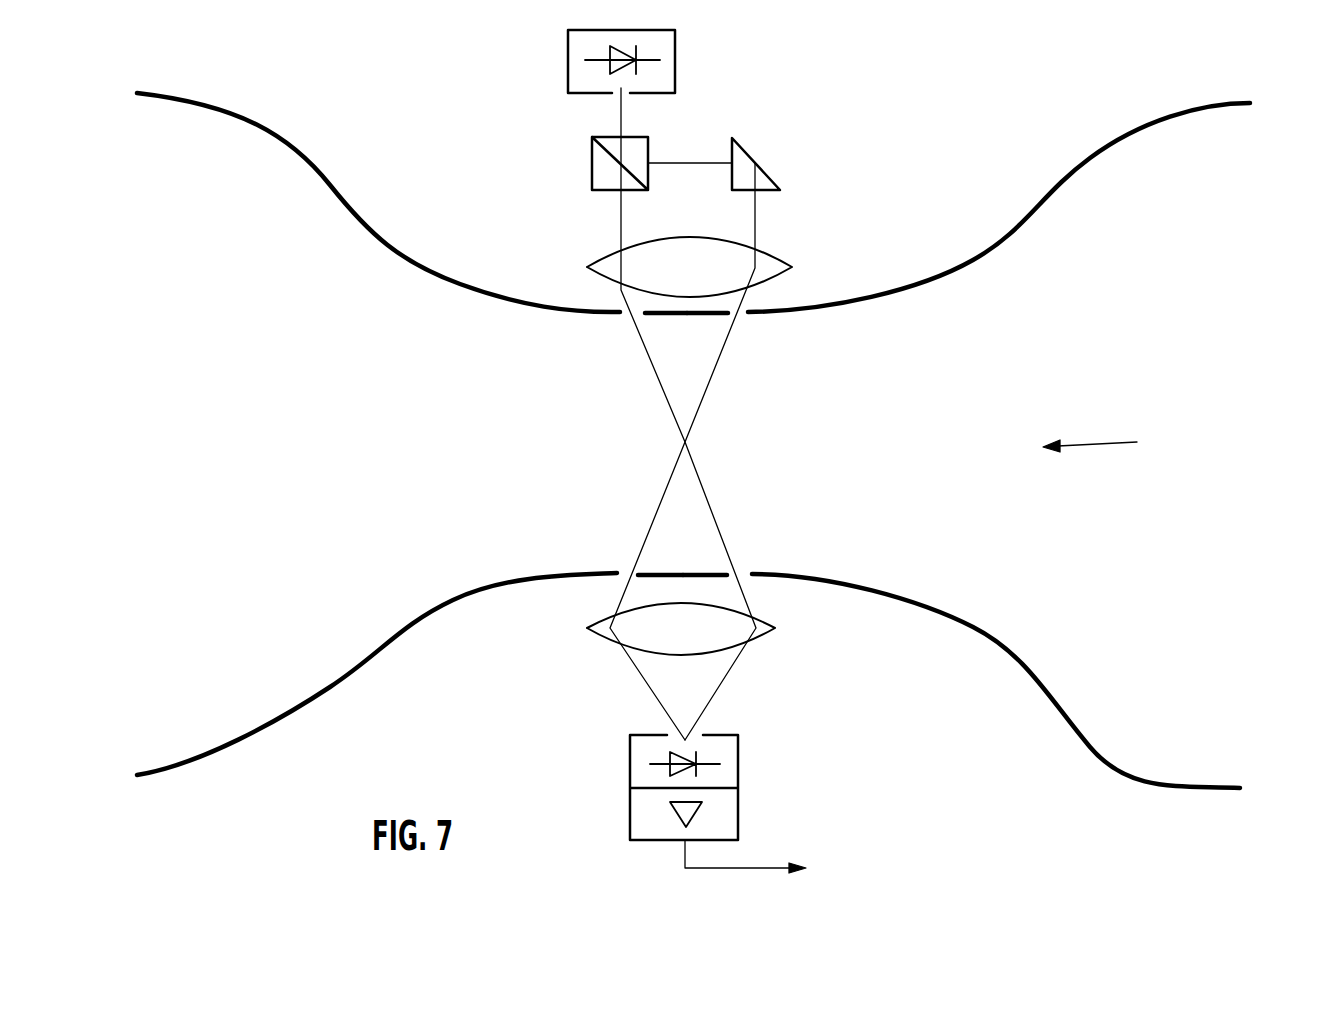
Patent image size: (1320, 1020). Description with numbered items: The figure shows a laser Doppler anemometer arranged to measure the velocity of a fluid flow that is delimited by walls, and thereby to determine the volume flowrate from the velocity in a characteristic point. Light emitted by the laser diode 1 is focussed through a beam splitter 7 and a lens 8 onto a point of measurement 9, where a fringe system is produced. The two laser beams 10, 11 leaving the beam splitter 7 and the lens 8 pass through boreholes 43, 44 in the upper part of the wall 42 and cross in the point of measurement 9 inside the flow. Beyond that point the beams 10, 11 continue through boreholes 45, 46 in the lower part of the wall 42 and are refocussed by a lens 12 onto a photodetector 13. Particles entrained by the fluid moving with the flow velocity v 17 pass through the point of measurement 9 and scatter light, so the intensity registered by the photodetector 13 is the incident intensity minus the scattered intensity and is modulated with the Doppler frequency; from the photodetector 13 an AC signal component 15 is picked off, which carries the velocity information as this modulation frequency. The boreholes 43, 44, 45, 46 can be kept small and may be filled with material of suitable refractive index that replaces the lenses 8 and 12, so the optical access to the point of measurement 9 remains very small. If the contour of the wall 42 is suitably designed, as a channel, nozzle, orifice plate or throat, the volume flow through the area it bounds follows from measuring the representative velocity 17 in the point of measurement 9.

The laser diode 1 is at (675, 63).
The beam splitter 7 is at (770, 172).
The lens 8 is at (770, 262).
The point of measurement 9 is at (690, 441).
The laser beam 10 is at (748, 300).
The laser beam 11 is at (627, 300).
The lens 12 is at (762, 634).
The photodetector 13 is at (740, 768).
The AC signal component 15 is at (760, 863).
The flow velocity v 17 is at (1102, 441).
The wall 42 is at (318, 163).
The borehole 43 is at (628, 318).
The borehole 44 is at (740, 318).
The borehole 45 is at (628, 570).
The borehole 46 is at (740, 570).